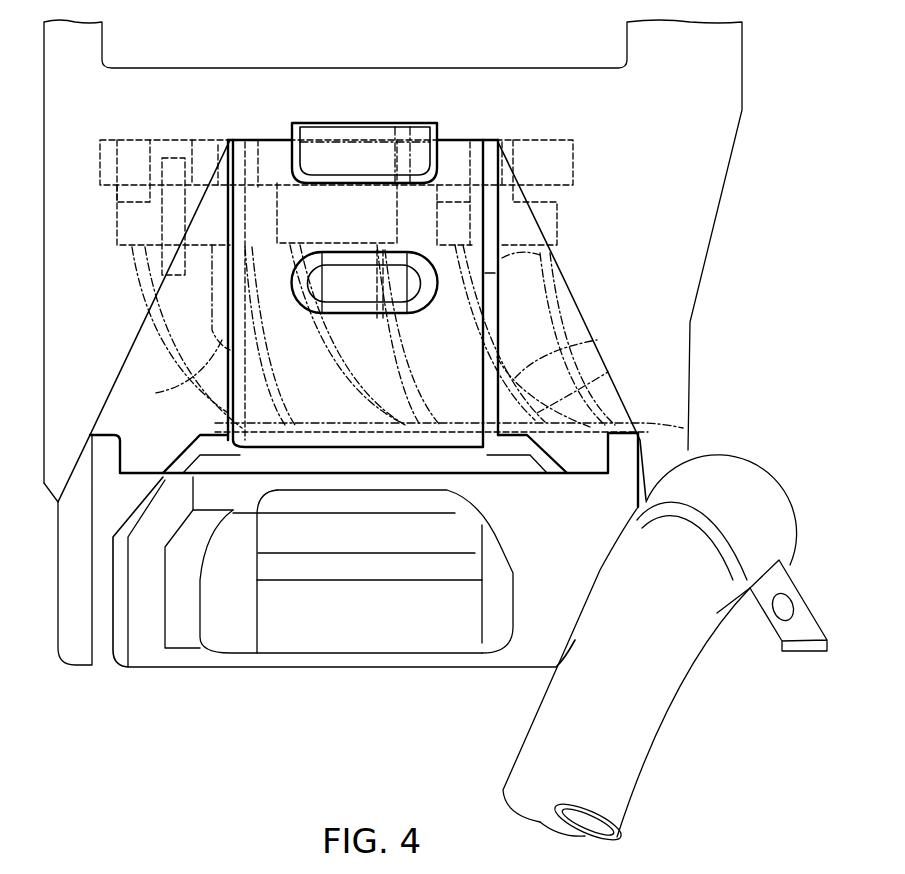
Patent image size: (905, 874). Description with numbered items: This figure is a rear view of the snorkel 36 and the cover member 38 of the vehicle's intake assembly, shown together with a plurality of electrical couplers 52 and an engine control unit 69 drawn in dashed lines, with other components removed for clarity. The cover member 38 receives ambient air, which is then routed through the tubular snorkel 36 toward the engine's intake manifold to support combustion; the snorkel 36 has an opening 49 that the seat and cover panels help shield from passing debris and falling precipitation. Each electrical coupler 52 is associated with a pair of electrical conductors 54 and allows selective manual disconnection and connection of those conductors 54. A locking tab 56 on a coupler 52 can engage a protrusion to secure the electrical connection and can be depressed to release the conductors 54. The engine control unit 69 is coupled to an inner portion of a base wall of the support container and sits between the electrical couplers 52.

The snorkel 36 is at (345, 625).
The cover member 38 is at (588, 460).
The opening 49 is at (305, 427).
The electrical coupler 52 is at (222, 150).
The electrical conductors 54 is at (137, 293).
The locking tab 56 is at (160, 260).
The engine control unit 69 is at (405, 160).